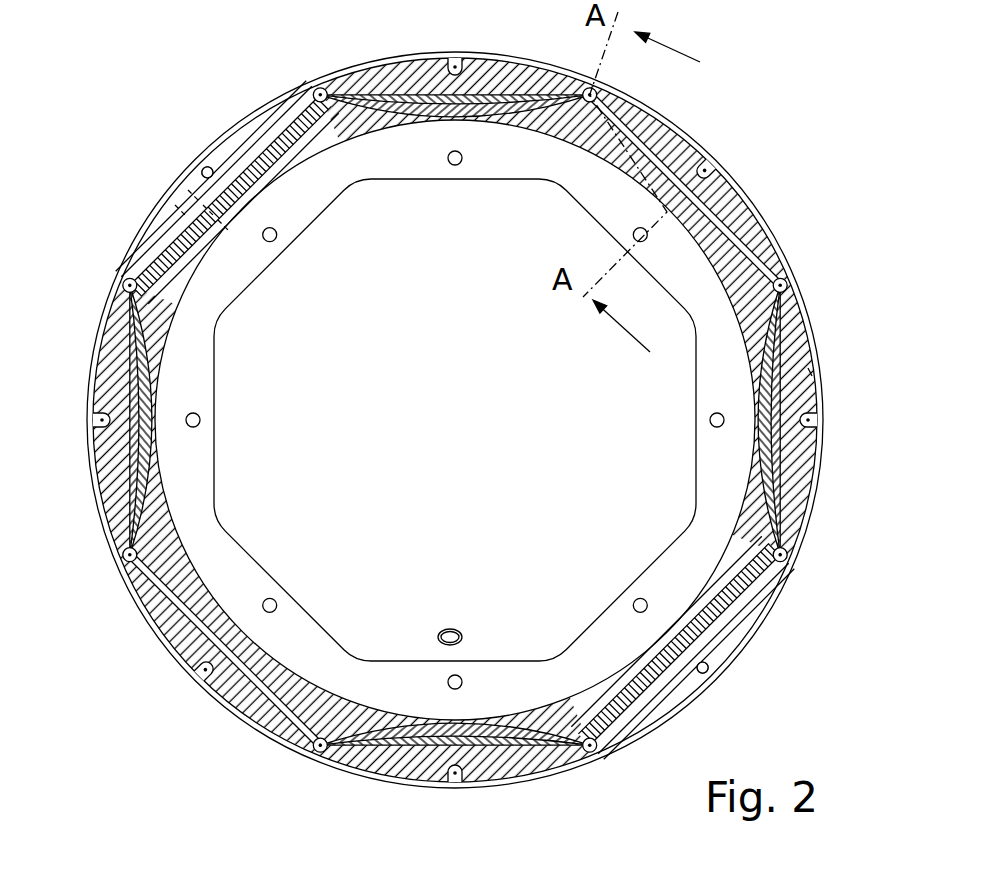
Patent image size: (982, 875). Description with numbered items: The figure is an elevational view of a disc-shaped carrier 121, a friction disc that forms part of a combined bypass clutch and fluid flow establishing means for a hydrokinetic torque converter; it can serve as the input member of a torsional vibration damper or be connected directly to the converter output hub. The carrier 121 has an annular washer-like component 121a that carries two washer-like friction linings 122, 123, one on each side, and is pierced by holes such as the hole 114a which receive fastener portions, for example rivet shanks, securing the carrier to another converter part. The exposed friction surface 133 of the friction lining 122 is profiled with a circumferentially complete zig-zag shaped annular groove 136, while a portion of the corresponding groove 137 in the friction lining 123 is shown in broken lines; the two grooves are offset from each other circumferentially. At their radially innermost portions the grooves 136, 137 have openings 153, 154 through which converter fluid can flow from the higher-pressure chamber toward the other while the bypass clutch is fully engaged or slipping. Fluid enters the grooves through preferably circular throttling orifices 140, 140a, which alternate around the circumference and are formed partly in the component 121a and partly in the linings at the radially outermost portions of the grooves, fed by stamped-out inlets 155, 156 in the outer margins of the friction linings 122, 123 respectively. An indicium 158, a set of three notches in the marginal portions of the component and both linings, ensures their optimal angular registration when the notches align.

The disc-shaped carrier 121 is at (742, 110).
The washer-like component 121a is at (194, 473).
The hole 114a is at (457, 166).
The friction lining 122 is at (483, 767).
The friction lining 123 is at (103, 347).
The friction surface 133 is at (515, 757).
The groove 136 is at (372, 748).
The groove 137 is at (182, 192).
The throttling orifice 140 is at (322, 90).
The throttling orifice 140a is at (207, 166).
The opening 153 is at (180, 312).
The opening 154 is at (450, 727).
The stamped-out inlet 155 is at (95, 428).
The stamped-out inlet 156 is at (310, 763).
The indicium 158 is at (813, 368).